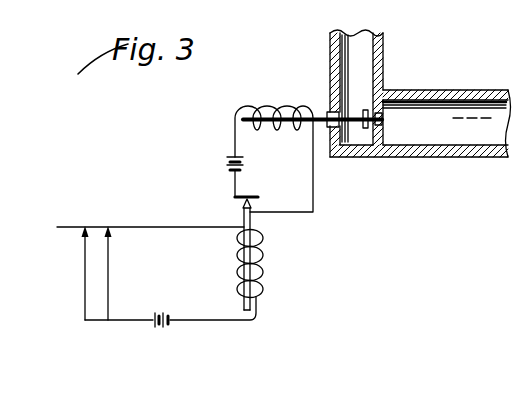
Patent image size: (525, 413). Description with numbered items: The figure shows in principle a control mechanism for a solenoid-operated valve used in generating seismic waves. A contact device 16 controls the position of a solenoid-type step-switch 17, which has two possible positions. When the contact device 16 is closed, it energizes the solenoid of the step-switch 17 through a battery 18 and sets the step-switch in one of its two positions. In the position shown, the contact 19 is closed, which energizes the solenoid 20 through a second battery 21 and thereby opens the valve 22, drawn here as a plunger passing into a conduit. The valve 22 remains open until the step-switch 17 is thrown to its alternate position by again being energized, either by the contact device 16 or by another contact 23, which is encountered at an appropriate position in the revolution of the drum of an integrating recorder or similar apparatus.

The contact device 16 is at (85, 275).
The solenoid-type step-switch 17 is at (263, 288).
The battery 18 is at (160, 330).
The contact 19 is at (240, 200).
The solenoid 20 is at (233, 118).
The battery 21 is at (226, 163).
The valve 22 is at (386, 118).
The contact 23 is at (110, 276).